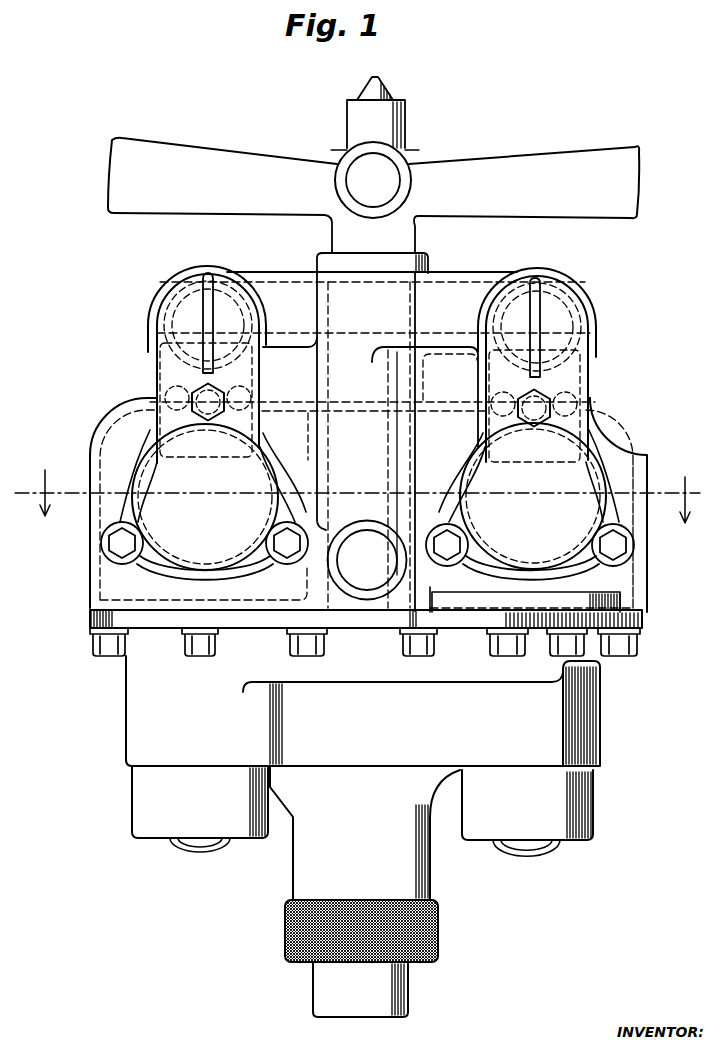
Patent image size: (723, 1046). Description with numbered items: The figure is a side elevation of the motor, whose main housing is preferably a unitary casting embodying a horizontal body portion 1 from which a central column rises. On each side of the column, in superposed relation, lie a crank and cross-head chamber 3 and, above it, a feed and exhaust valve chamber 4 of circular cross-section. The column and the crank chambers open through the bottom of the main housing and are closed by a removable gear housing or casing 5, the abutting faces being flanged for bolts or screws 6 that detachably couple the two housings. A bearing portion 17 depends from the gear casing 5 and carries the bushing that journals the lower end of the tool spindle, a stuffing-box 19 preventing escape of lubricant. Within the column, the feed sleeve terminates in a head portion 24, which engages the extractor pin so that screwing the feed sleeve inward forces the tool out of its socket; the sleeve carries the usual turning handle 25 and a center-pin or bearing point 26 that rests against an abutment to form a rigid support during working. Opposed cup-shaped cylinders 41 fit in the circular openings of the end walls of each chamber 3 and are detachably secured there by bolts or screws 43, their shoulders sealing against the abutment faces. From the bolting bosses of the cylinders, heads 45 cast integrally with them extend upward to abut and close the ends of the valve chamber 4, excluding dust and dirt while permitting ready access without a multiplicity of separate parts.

The horizontal body portion 1 is at (397, 334).
The crank and cross-head chamber 3 is at (620, 453).
The feed and exhaust valve chamber 4 is at (591, 303).
The gear housing or casing 5 is at (145, 718).
The bolts or screws 6 is at (575, 659).
The bearing portion 17 is at (307, 862).
The stuffing-box 19 is at (305, 928).
The head portion 24 is at (352, 244).
The turning handle 25 is at (237, 167).
The center-pin or bearing point 26 is at (379, 81).
The cup-shaped cylinders 41 is at (369, 496).
The bolts or screws 43 is at (657, 554).
The heads 45 is at (555, 339).